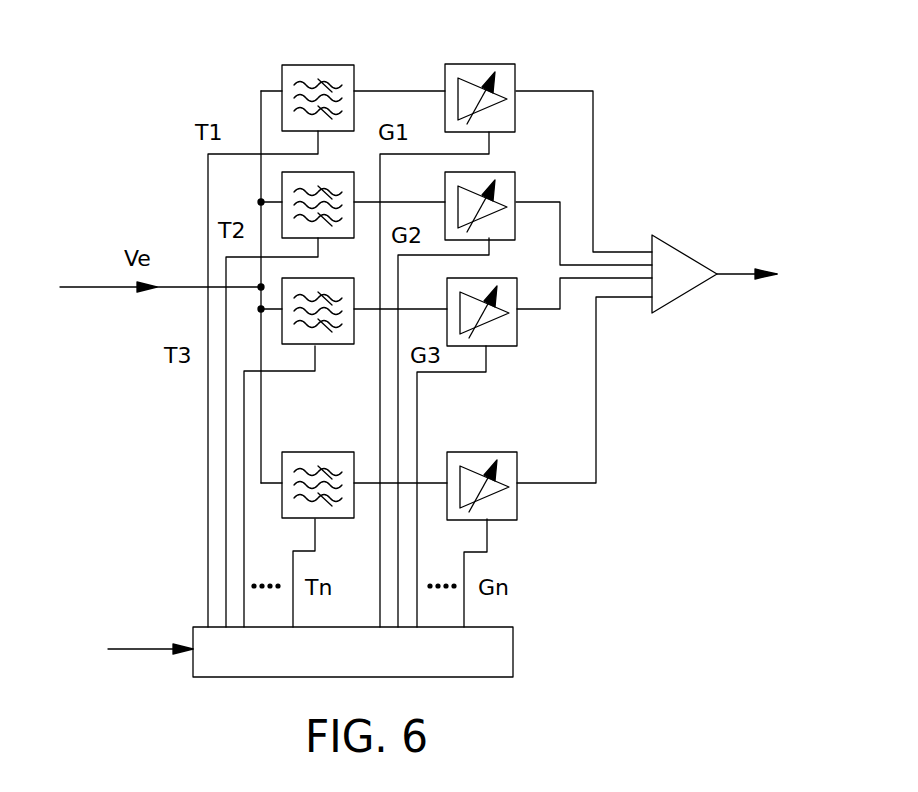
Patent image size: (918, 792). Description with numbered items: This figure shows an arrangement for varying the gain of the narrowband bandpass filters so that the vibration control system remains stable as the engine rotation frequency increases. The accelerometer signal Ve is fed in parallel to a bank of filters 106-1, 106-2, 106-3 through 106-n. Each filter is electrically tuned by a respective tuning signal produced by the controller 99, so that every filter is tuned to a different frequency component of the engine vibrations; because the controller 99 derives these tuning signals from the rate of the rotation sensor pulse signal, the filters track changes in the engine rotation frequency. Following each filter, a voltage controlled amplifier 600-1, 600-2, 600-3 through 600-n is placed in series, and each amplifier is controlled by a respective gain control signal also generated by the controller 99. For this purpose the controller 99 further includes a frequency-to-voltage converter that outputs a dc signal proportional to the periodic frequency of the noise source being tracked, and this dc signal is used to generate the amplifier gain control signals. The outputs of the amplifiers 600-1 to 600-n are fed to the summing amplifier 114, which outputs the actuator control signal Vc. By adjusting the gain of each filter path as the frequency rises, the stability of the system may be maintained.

The filter 106-1 is at (292, 65).
The filter 106-2 is at (282, 180).
The filter 106-3 is at (347, 346).
The filter 106-n is at (313, 452).
The voltage controlled amplifier 600-1 is at (495, 64).
The voltage controlled amplifier 600-2 is at (515, 172).
The voltage controlled amplifier 600-3 is at (517, 325).
The voltage controlled amplifier 600-n is at (517, 500).
The summing amplifier 114 is at (700, 262).
The controller 99 is at (510, 635).